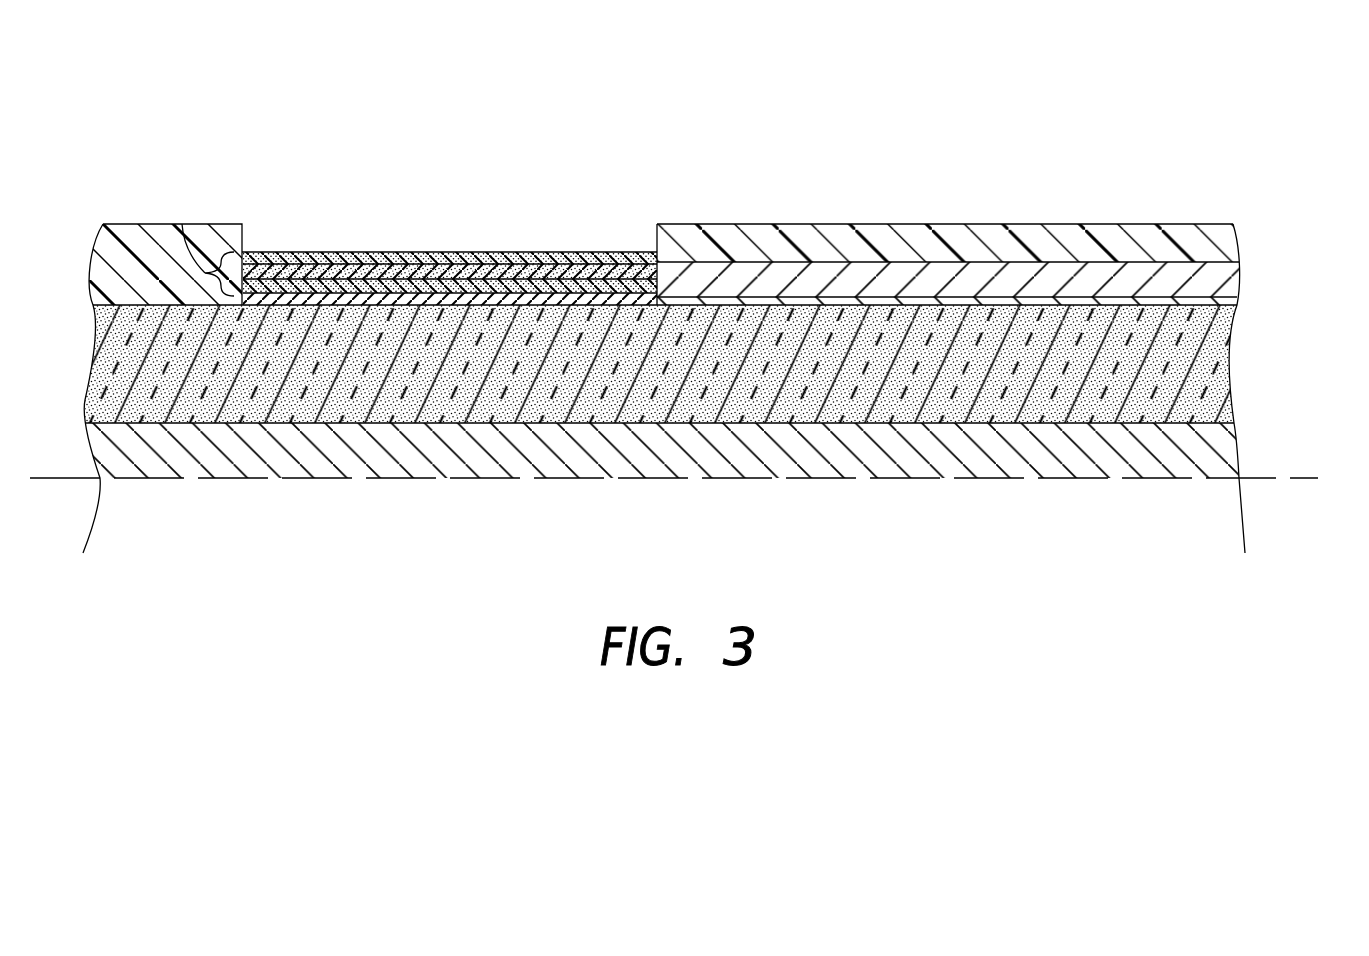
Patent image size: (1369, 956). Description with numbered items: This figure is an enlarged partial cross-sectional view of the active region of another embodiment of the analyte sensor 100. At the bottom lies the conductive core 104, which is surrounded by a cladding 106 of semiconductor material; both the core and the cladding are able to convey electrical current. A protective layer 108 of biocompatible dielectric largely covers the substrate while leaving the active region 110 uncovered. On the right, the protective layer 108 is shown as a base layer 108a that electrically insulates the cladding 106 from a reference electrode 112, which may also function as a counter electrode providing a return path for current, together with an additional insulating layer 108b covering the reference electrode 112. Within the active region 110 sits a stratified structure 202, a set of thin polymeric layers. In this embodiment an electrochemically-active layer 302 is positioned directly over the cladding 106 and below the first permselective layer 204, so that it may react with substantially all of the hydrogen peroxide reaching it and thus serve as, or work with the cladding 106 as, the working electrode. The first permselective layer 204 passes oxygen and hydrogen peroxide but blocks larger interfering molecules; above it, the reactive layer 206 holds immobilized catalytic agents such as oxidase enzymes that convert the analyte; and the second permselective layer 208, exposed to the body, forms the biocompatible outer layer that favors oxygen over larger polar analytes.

The analyte sensor 100 is at (192, 132).
The conductive core 104 is at (1223, 450).
The cladding 106 is at (1191, 373).
The protective layer 108 is at (160, 224).
The base layer 108a is at (1231, 300).
The additional insulating layer 108b is at (1227, 229).
The active region 110 is at (403, 163).
The reference electrode 112 is at (1234, 265).
The stratified structure 202 is at (182, 224).
The first permselective layer 204 is at (505, 268).
The reactive layer 206 is at (352, 253).
The second permselective layer 208 is at (263, 252).
The electrochemically-active layer 302 is at (458, 264).